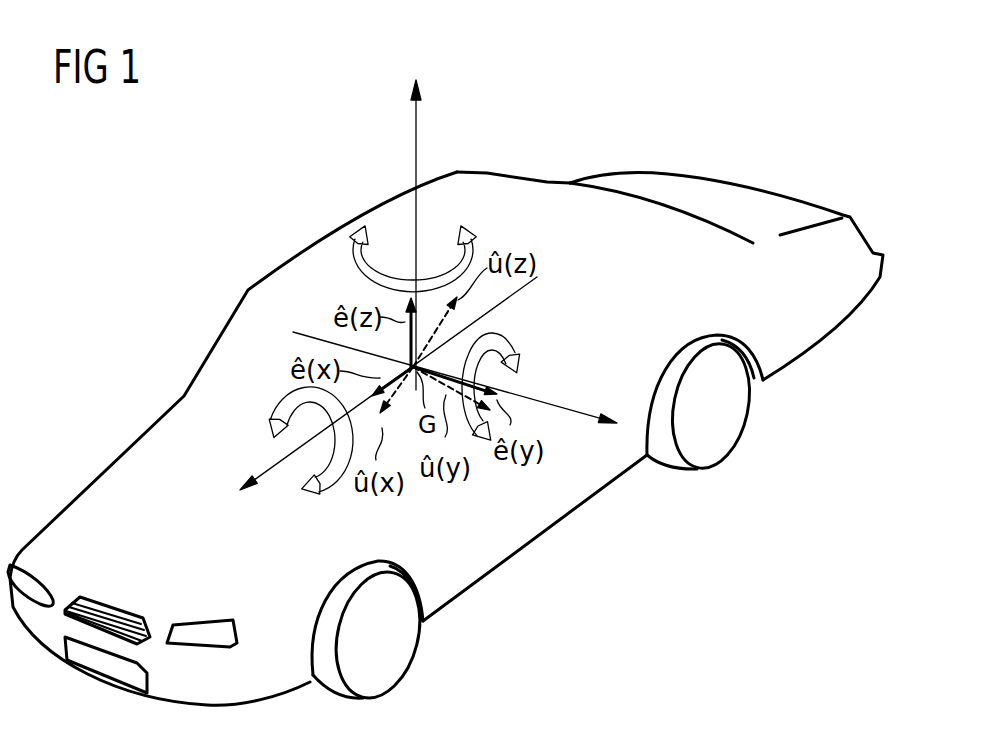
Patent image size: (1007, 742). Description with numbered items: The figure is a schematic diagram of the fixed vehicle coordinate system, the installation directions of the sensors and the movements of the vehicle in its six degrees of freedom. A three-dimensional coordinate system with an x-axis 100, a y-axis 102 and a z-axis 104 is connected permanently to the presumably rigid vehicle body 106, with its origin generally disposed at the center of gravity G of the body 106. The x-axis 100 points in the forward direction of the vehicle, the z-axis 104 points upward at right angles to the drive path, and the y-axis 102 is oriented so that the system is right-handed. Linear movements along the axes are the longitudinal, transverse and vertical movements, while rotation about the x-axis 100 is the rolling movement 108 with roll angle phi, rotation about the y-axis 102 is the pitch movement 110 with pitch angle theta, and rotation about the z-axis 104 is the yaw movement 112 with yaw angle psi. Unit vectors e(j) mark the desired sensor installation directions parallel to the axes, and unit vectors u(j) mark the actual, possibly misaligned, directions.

The x-axis 100 is at (273, 476).
The y-axis 102 is at (578, 410).
The z-axis 104 is at (414, 128).
The body 106 is at (710, 190).
The rolling movement 108 is at (266, 423).
The pitch movement 110 is at (527, 350).
The yaw movement 112 is at (482, 213).